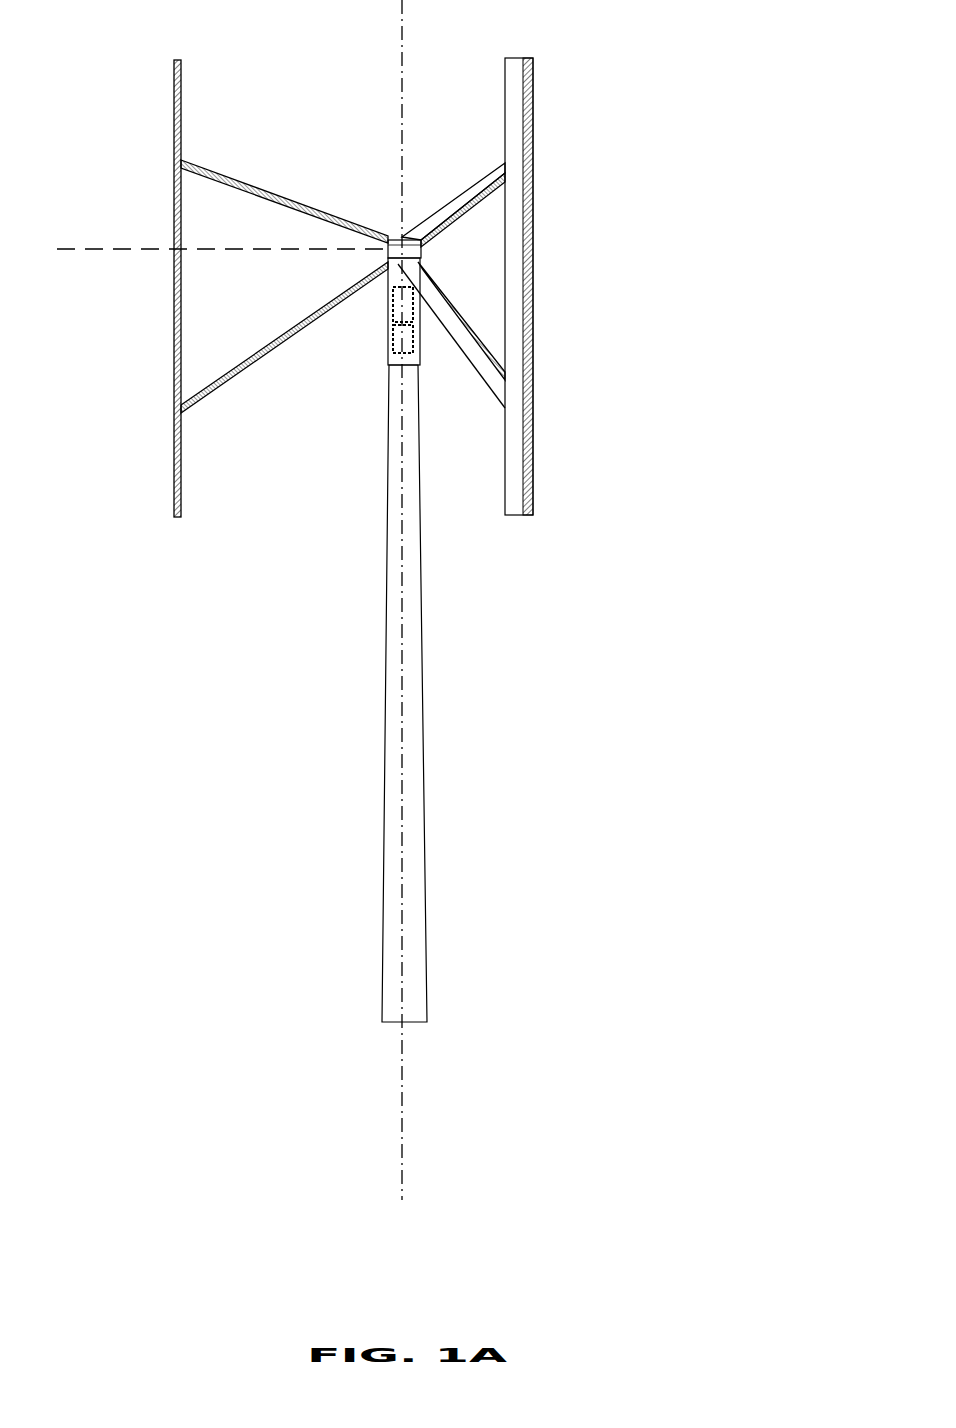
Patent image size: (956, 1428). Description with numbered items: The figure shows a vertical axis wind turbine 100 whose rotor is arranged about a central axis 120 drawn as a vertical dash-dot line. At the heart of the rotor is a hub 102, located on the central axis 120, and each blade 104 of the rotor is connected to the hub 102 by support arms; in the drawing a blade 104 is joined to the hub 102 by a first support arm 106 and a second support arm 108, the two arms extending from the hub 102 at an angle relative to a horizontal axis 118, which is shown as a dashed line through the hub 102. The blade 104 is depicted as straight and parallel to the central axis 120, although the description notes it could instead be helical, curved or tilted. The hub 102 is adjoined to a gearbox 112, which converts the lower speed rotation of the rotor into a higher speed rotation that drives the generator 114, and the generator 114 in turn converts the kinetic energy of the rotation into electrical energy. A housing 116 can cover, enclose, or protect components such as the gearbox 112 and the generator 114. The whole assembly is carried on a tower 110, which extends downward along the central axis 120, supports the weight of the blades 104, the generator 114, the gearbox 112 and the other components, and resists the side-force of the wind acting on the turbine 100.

The vertical axis wind turbine 100 is at (728, 148).
The hub 102 is at (390, 238).
The blade 104 is at (173, 126).
The first support arm 106 is at (270, 183).
The second support arm 108 is at (270, 348).
The tower 110 is at (385, 817).
The gearbox 112 is at (393, 316).
The generator 114 is at (393, 345).
The housing 116 is at (418, 368).
The horizontal axis 118 is at (95, 253).
The central axis 120 is at (400, 13).